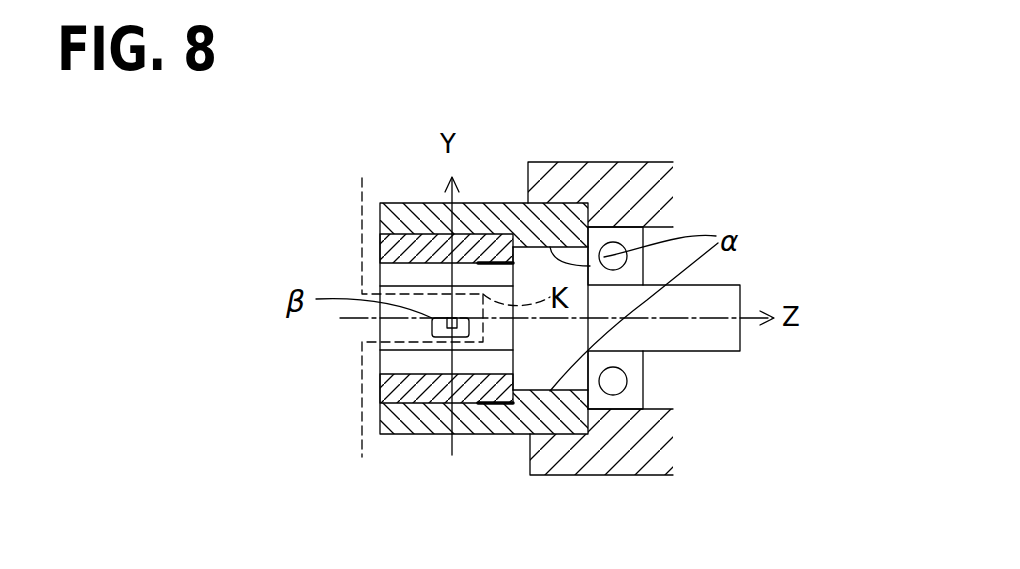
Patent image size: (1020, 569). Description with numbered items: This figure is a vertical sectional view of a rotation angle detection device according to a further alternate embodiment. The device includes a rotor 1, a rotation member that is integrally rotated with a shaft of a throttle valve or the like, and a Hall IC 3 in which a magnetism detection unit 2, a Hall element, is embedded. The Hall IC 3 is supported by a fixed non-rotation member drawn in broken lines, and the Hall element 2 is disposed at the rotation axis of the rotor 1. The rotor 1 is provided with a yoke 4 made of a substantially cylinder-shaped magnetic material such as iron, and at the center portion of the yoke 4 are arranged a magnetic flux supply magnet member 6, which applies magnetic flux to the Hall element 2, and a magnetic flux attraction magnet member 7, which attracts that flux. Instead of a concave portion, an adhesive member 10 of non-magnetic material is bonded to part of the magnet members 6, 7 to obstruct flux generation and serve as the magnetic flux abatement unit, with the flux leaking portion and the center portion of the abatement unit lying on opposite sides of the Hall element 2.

The rotor 1 is at (384, 178).
The magnetism detection unit 2 is at (453, 323).
The Hall IC 3 is at (465, 347).
The yoke 4 is at (550, 204).
The magnetic flux supply magnet member 6 is at (381, 244).
The magnetic flux attraction magnet member 7 is at (392, 384).
The adhesive member 10 is at (510, 260).